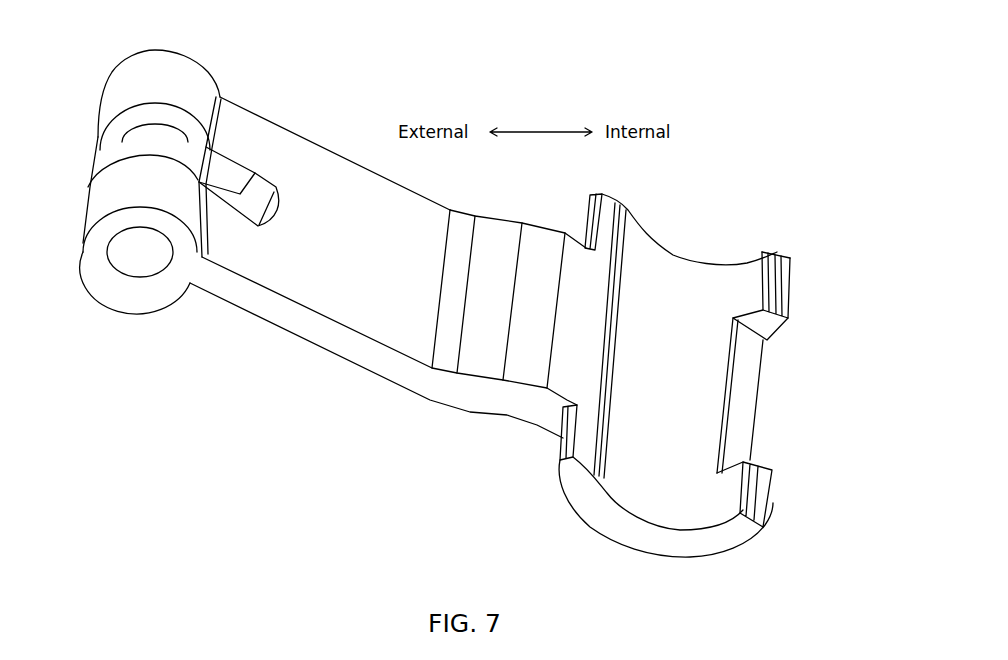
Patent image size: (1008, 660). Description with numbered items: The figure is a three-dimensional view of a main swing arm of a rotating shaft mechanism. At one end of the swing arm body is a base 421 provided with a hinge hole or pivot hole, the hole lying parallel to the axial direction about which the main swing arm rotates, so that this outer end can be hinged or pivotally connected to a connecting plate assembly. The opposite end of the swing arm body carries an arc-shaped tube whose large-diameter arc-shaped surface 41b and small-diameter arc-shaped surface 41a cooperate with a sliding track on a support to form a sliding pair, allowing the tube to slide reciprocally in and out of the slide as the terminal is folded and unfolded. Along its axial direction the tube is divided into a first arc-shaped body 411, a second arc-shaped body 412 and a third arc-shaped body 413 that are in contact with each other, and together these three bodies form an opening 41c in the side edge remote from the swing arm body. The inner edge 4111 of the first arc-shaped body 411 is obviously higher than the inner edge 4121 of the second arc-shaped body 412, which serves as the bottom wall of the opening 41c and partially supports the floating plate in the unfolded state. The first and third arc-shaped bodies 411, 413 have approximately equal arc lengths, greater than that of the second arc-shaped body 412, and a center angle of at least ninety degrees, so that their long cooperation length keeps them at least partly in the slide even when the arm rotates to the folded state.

The base 421 is at (170, 97).
The small-diameter arc-shaped surface 41a is at (683, 277).
The inner edge of the first arc-shaped body 4111 is at (788, 253).
The first arc-shaped body 411 is at (797, 267).
The opening 41c is at (773, 387).
The inner edge of the second arc-shaped body 4121 is at (733, 432).
The second arc-shaped body 412 is at (793, 327).
The third arc-shaped body 413 is at (772, 470).
The large-diameter arc-shaped surface 41b is at (630, 545).